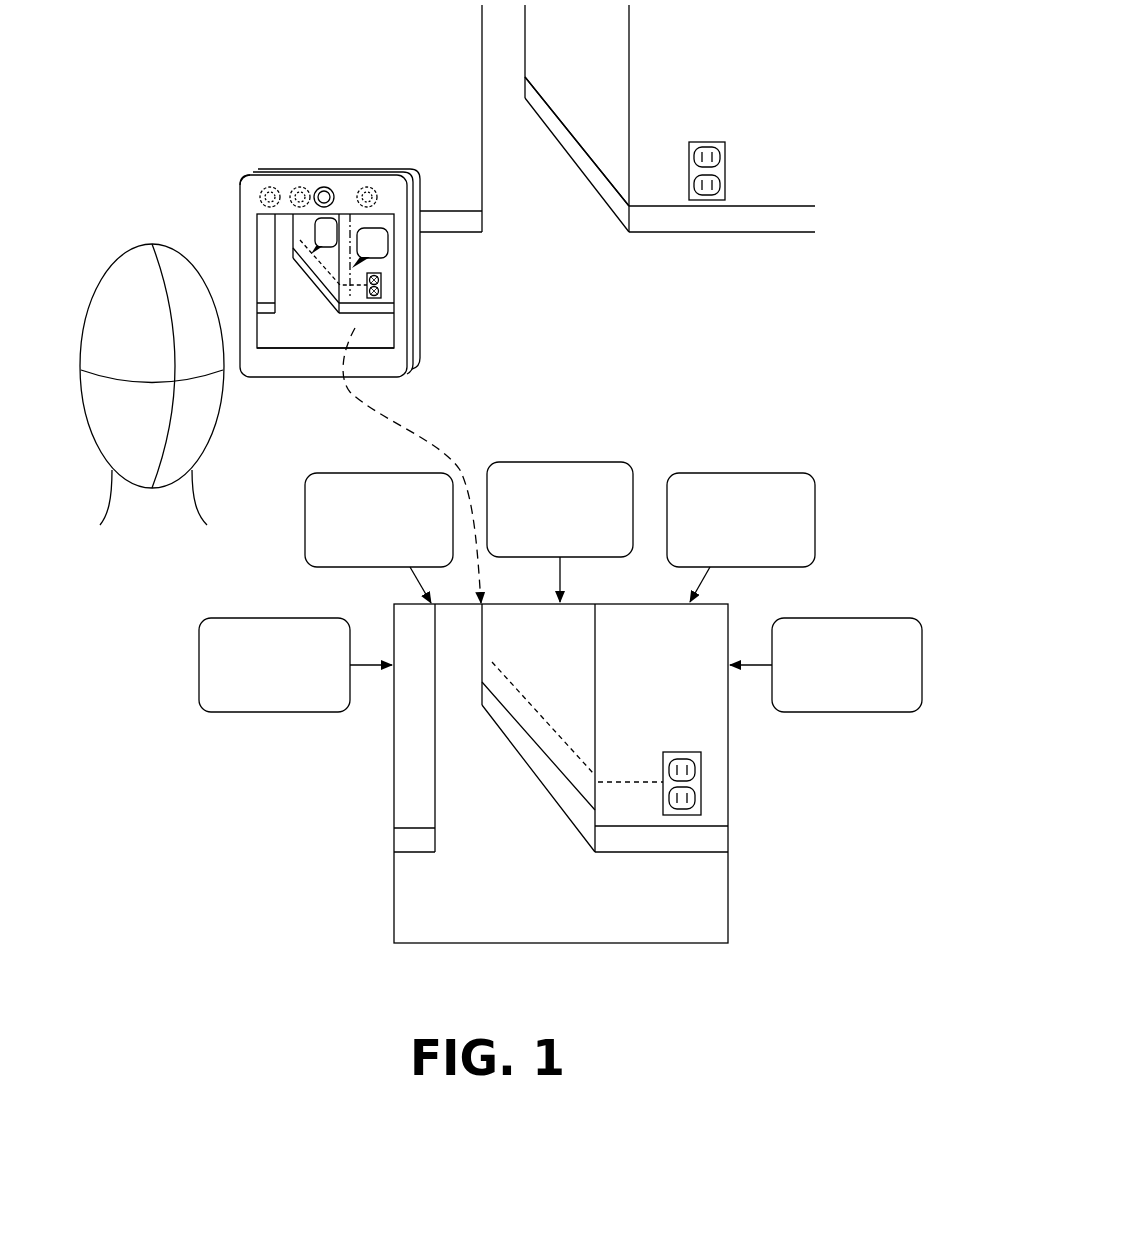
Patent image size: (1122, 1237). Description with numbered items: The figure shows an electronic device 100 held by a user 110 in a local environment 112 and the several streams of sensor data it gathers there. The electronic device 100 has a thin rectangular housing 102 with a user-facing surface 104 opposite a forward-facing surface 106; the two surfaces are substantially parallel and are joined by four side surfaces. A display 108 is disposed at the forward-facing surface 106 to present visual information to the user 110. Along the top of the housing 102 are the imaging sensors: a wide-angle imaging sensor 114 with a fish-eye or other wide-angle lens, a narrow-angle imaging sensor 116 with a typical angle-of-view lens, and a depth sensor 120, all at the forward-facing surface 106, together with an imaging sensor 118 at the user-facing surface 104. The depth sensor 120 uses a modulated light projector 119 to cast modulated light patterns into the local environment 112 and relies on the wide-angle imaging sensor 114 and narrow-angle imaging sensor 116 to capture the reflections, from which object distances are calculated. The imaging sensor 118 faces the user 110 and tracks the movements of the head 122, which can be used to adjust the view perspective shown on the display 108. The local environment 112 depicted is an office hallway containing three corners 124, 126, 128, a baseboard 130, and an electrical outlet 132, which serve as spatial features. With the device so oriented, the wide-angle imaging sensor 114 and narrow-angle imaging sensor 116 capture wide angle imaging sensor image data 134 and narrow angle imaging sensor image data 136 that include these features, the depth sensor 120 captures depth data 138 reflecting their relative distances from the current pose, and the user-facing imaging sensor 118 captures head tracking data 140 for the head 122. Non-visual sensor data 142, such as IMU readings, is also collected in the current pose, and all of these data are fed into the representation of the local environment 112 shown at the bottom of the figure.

The electronic device 100 is at (238, 245).
The housing 102 is at (420, 293).
The surface 104 is at (298, 368).
The surface 106 is at (424, 350).
The display 108 is at (362, 341).
The user 110 is at (147, 530).
The local environment 112 is at (589, 252).
The wide-angle imaging sensor 114 is at (266, 187).
The narrow-angle imaging sensor 116 is at (373, 187).
The imaging sensor 118 is at (331, 187).
The modulated light projector 119 is at (302, 187).
The depth sensor 120 is at (287, 182).
The head 122 is at (117, 258).
The corner 124 is at (482, 196).
The corner 126 is at (629, 78).
The corner 128 is at (525, 46).
The baseboard 130 is at (609, 192).
The electrical outlet 132 is at (725, 165).
The wide angle imaging sensor image data 134 is at (266, 618).
The narrow angle imaging sensor image data 136 is at (378, 473).
The depth data 138 is at (563, 462).
The head tracking data 140 is at (742, 473).
The non-visual sensor data 142 is at (853, 618).